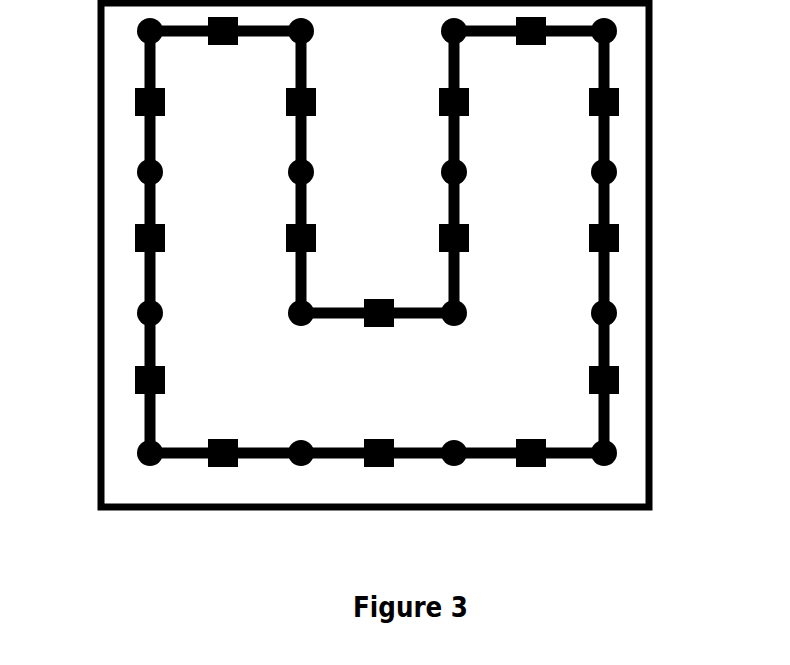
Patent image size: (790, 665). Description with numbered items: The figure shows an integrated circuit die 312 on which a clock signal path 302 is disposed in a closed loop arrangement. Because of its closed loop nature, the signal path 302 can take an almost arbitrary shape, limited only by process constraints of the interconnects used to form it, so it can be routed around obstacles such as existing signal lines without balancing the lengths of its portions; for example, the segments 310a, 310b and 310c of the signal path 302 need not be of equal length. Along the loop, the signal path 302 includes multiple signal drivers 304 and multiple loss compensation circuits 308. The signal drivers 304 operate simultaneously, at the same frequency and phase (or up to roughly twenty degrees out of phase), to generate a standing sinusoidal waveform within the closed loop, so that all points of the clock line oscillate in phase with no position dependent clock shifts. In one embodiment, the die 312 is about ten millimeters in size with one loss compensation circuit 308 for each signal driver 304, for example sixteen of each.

The signal path 302 is at (145, 62).
The signal driver 304 is at (138, 175).
The loss compensation circuit 308 is at (135, 243).
The segment 310a is at (312, 38).
The segment 310b is at (457, 322).
The segment 310c is at (465, 38).
The die 312 is at (597, 496).